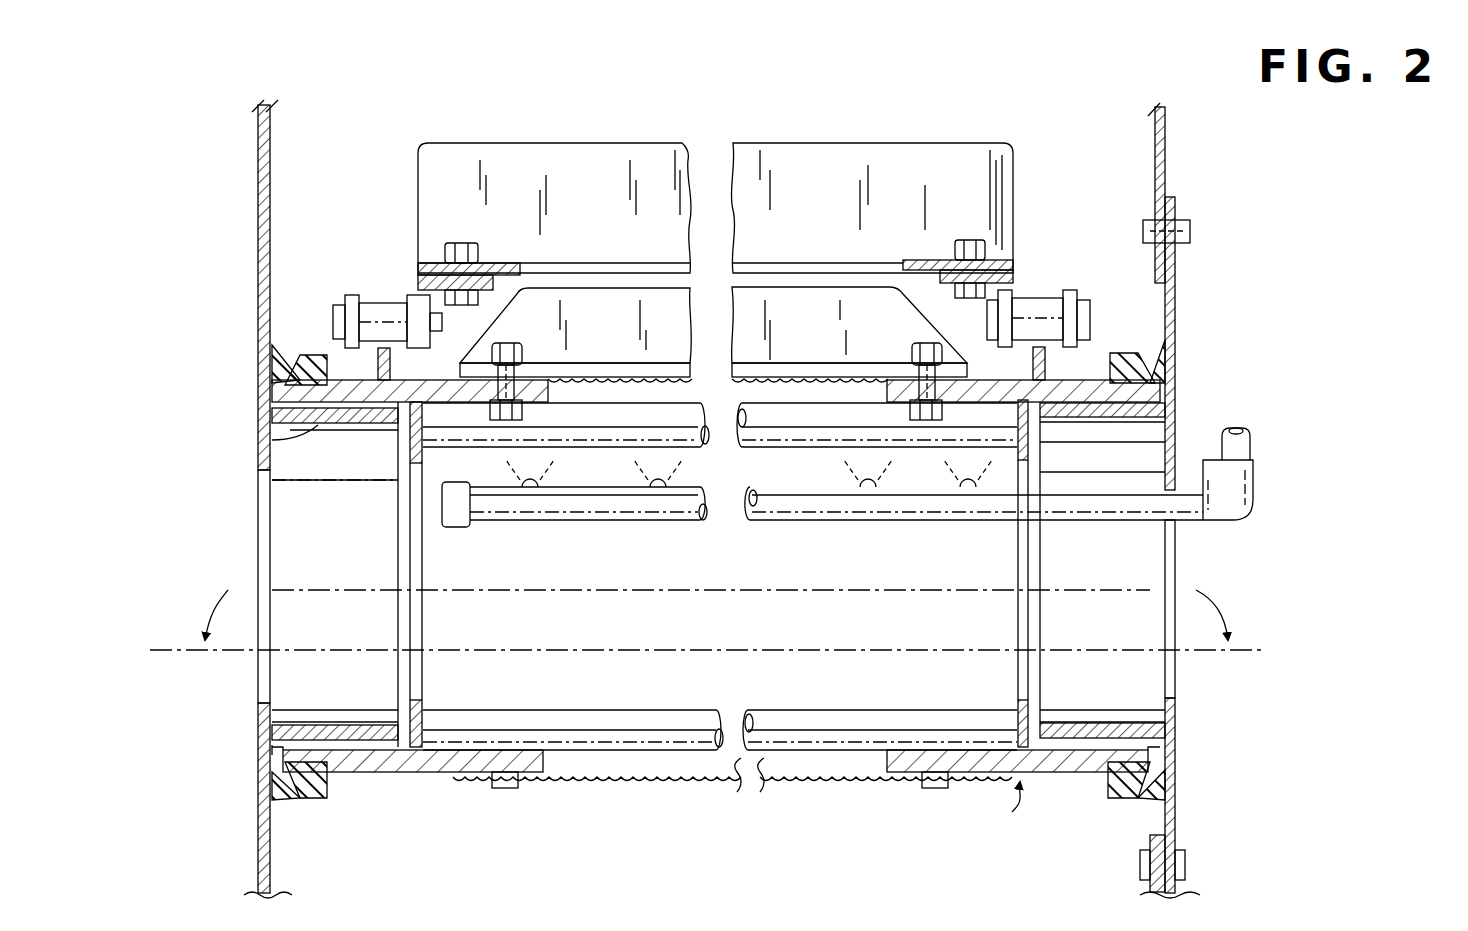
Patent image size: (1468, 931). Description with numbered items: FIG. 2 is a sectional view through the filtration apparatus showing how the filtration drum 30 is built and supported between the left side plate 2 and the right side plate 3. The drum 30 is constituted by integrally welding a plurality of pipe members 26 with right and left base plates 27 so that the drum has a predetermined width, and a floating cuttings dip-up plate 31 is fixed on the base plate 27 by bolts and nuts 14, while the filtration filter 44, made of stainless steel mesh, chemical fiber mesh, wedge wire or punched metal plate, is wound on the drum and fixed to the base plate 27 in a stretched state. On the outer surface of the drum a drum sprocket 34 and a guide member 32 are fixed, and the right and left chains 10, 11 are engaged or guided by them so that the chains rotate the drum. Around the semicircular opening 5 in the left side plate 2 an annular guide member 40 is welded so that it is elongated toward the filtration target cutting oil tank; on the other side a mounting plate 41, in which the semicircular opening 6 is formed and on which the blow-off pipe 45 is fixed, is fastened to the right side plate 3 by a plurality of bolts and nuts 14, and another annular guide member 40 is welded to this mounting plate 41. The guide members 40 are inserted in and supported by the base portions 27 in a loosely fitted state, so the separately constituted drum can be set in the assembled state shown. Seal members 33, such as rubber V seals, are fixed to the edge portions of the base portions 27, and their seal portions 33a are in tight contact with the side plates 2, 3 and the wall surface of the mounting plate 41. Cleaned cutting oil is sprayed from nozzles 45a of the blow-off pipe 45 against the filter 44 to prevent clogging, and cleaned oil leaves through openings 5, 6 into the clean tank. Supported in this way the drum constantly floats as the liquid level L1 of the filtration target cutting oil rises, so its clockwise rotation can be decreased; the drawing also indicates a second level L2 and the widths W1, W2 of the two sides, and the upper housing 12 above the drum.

The left side plate 2 is at (258, 223).
The right side plate 3 is at (1165, 143).
The semicircular opening 5 is at (258, 693).
The semicircular opening 6 is at (1176, 688).
The right endless chain 10 is at (384, 300).
The left endless chain 11 is at (1040, 300).
The upper housing 12 is at (822, 158).
The bolts and nuts 14 is at (506, 345).
The pipe members 26 is at (765, 437).
The base plates 27 is at (412, 775).
The filtration drum 30 is at (1010, 816).
The floating cuttings dip-up plate 31 is at (598, 300).
The guide member 32 is at (1040, 362).
The seal members 33 is at (311, 356).
The seal portions 33a is at (274, 376).
The drum sprocket 34 is at (382, 355).
The annular guide member 40 is at (280, 435).
The mounting plate 41 is at (1216, 442).
The filtration filter 44 is at (745, 385).
The blow-off pipe 45 is at (808, 506).
The spray nozzle 45a is at (868, 490).
The liquid level L1 is at (1060, 588).
The line L2 is at (1246, 646).
The width W1 is at (205, 606).
The width W2 is at (1222, 606).